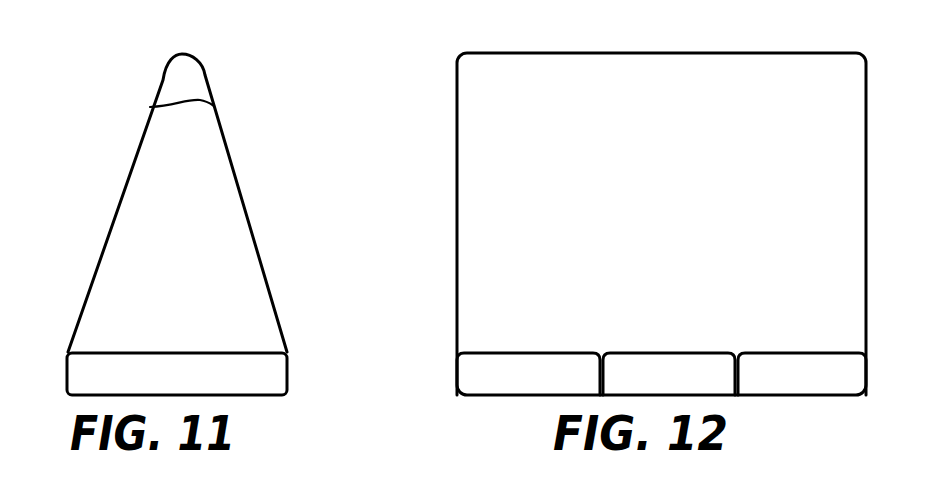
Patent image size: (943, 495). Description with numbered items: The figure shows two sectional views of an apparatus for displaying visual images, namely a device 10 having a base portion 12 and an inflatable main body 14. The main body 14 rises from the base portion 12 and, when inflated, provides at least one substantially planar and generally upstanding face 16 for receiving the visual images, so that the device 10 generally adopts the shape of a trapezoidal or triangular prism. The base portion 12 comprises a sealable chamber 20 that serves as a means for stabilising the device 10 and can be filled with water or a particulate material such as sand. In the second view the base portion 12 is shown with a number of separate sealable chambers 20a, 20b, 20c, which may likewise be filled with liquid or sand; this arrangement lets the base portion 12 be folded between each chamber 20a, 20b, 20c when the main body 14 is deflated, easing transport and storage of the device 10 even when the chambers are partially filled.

In FIG. 11, the device 10 is at (242, 100).
In FIG. 12, the device 10 is at (427, 136).
In FIG. 11, the base portion 12 is at (178, 344).
In FIG. 12, the base portion 12 is at (619, 336).
In FIG. 11, the inflatable main body 14 is at (198, 190).
In FIG. 12, the inflatable main body 14 is at (518, 193).
In FIG. 11, the face 16 is at (134, 149).
In FIG. 11, the sealable chamber 20 is at (224, 364).
In FIG. 12, the sealable chamber 20a is at (510, 361).
In FIG. 12, the sealable chamber 20b is at (640, 367).
In FIG. 12, the sealable chamber 20c is at (800, 368).